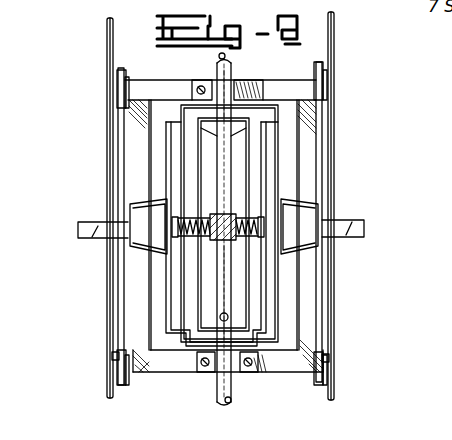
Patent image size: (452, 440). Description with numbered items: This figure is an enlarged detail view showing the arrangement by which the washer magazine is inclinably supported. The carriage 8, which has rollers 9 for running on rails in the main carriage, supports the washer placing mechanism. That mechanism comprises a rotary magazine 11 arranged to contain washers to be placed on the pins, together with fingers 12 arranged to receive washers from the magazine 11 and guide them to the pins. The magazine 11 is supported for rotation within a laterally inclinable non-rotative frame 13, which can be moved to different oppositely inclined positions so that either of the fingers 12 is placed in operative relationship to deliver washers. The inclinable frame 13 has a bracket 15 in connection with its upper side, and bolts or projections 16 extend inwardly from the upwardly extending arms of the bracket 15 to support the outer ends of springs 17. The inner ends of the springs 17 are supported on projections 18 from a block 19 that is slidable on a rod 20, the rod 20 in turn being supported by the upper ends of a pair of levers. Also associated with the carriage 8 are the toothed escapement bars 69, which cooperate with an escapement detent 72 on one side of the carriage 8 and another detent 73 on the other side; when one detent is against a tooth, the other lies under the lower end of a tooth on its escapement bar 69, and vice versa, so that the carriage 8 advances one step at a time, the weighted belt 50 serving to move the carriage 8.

The carriage 8 is at (309, 308).
The rollers 9 is at (120, 78).
The rotary magazine 11 is at (239, 298).
The fingers 12 is at (95, 237).
The inclinable non-rotative frame 13 is at (183, 297).
The bracket 15 is at (263, 230).
The bolts or projections 16 is at (177, 227).
The springs 17 is at (254, 92).
The projections 18 is at (224, 237).
The block 19 is at (229, 213).
The rod 20 is at (236, 383).
The weighted belt 50 is at (226, 58).
The toothed escapement bars 69 is at (110, 180).
The escapement detent 72 is at (330, 358).
The detent 73 is at (113, 360).